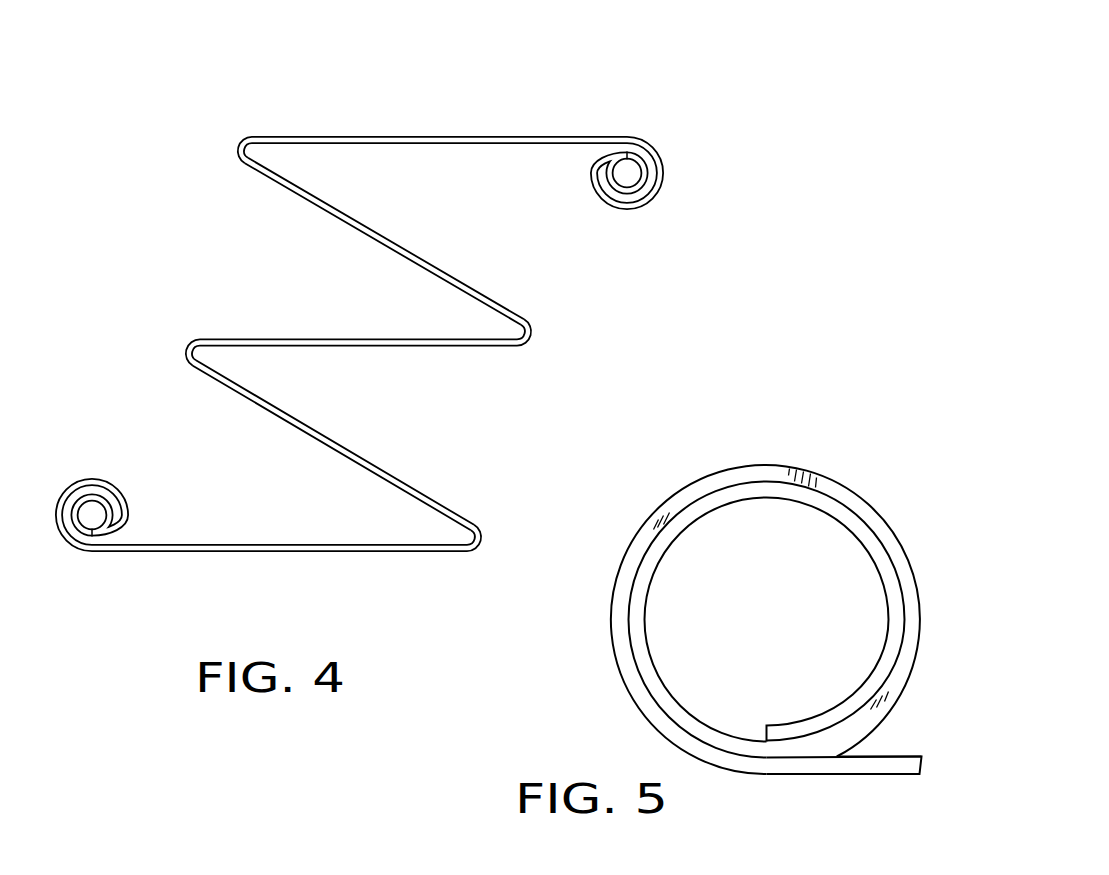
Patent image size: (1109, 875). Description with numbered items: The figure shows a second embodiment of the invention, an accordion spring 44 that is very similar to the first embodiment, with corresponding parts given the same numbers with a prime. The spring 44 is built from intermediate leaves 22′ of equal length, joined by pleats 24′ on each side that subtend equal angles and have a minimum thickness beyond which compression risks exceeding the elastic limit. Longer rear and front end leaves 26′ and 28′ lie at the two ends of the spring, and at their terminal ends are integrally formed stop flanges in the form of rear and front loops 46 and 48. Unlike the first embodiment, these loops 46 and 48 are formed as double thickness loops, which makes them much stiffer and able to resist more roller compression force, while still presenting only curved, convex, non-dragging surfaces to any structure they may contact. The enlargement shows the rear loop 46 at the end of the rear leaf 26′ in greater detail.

In FIG. 4, the intermediate leaf 22′ is at (370, 227).
In FIG. 4, the pleat 24′ is at (235, 150).
In FIG. 4, the rear end leaf 26′ is at (298, 552).
In FIG. 5, the rear end leaf 26′ is at (893, 773).
In FIG. 4, the front end leaf 28′ is at (432, 137).
In FIG. 4, the spring 44 is at (183, 290).
In FIG. 5, the spring 44 is at (846, 470).
In FIG. 4, the rear loop 46 is at (82, 482).
In FIG. 5, the rear loop 46 is at (722, 480).
In FIG. 4, the front loop 48 is at (664, 170).